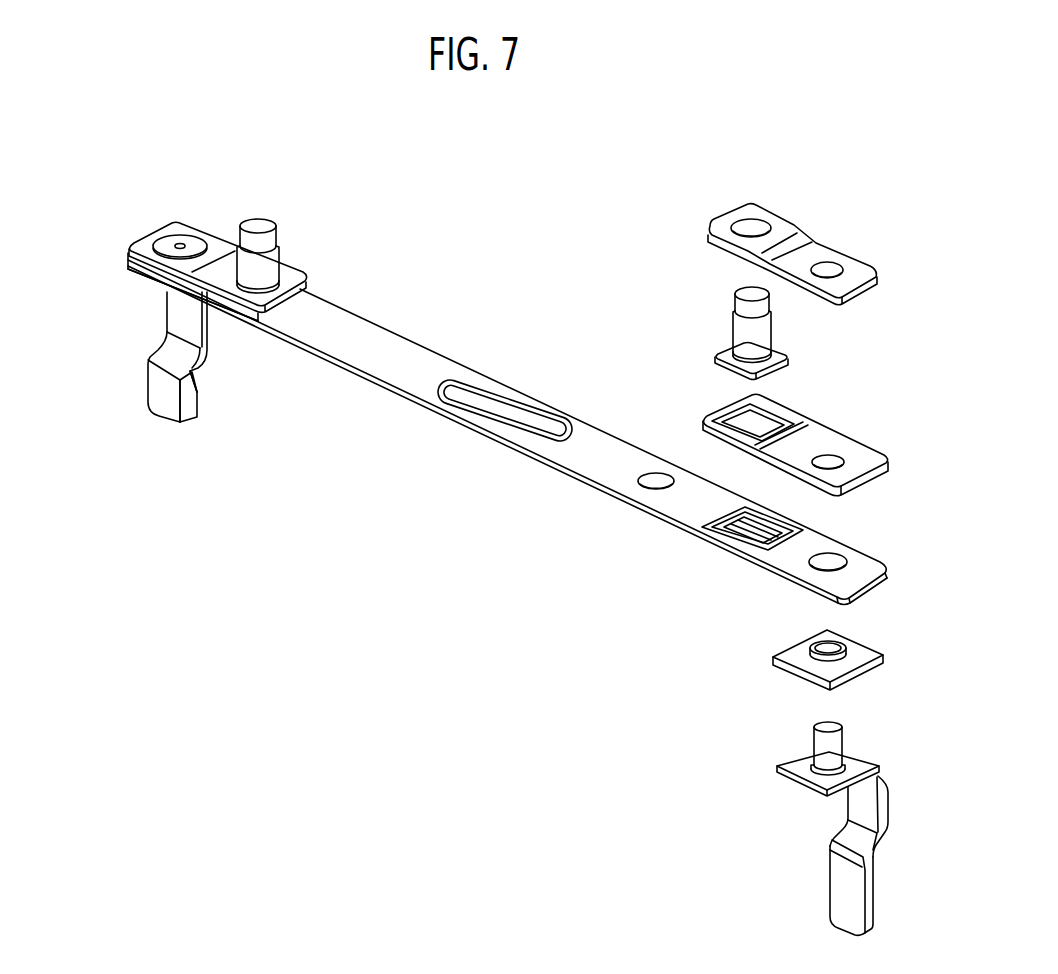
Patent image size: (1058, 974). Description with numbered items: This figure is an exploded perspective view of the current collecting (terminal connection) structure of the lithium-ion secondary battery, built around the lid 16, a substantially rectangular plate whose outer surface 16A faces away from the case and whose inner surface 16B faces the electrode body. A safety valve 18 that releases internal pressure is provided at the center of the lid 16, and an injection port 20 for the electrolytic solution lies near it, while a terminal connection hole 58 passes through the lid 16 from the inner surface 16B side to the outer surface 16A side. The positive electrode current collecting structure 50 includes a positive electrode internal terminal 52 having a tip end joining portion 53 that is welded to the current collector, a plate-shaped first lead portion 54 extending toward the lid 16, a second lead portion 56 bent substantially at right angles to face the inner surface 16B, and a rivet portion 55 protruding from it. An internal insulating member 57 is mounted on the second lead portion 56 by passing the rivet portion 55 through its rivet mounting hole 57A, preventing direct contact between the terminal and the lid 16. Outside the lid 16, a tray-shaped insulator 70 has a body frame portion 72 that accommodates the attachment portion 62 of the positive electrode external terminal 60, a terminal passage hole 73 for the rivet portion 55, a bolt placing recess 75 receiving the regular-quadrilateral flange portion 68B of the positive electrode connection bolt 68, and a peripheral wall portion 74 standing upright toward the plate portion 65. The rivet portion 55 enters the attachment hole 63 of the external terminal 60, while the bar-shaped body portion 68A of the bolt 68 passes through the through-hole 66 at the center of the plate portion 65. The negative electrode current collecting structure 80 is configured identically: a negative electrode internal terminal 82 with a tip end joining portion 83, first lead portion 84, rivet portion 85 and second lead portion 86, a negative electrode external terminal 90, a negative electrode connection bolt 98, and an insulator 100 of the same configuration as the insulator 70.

The lid 16 is at (523, 432).
The outer surface of the lid 16A is at (393, 355).
The inner surface of the lid 16B is at (408, 400).
The safety valve 18 is at (492, 405).
The injection port 20 is at (650, 480).
The positive electrode current collecting structure 50 is at (774, 773).
The positive electrode internal terminal 52 is at (839, 823).
The tip end joining portion 53 is at (872, 898).
The first lead portion 54 is at (890, 805).
The rivet portion 55 is at (848, 733).
The second lead portion 56 is at (812, 775).
The internal insulating member 57 is at (819, 654).
The rivet mounting hole 57A is at (840, 650).
The terminal connection hole 58 is at (830, 558).
The positive electrode external terminal 60 is at (822, 227).
The attachment portion 62 is at (873, 283).
The attachment hole 63 is at (828, 268).
The plate portion 65 is at (773, 223).
The through-hole 66 is at (748, 226).
The positive electrode connection bolt 68 is at (762, 317).
The bar-shaped body portion 68A is at (735, 293).
The flange portion 68B is at (720, 352).
The insulator 70 is at (794, 428).
The body frame portion 72 is at (882, 474).
The terminal passage hole 73 is at (830, 460).
The peripheral wall portion 74 is at (778, 402).
The bolt placing recess 75 is at (722, 418).
The negative electrode current collecting structure 80 is at (209, 317).
The negative electrode internal terminal 82 is at (147, 395).
The tip end joining portion 83 is at (185, 424).
The first lead portion 84 is at (165, 313).
The rivet portion 85 is at (195, 243).
The second lead portion 86 is at (122, 272).
The negative electrode external terminal 90 is at (256, 225).
The negative electrode connection bolt 98 is at (270, 257).
The insulator 100 is at (313, 293).